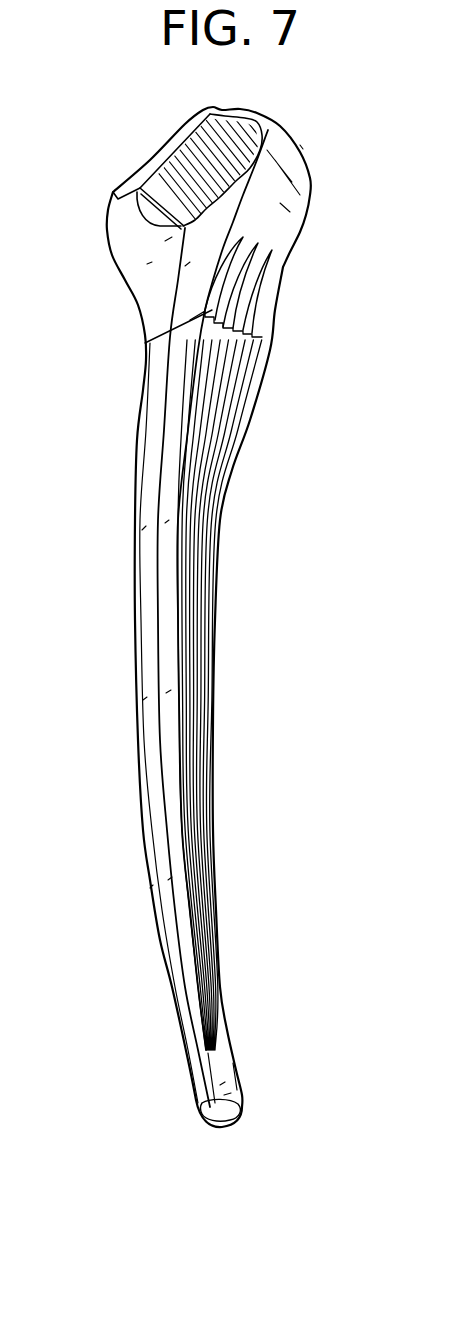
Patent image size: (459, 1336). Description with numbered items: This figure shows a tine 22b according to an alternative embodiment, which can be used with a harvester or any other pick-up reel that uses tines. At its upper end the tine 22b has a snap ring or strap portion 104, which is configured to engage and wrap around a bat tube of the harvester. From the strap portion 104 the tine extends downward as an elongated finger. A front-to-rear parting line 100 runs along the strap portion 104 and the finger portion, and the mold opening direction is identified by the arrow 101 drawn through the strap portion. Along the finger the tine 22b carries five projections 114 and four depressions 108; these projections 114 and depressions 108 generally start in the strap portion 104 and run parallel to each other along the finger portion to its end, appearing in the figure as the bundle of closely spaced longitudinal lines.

The parting line 100 is at (162, 405).
The arrow 101 is at (170, 208).
The strap portion 104 is at (300, 205).
The tine 22b is at (274, 590).
The projections 114 is at (215, 342).
The depressions 108 is at (218, 397).